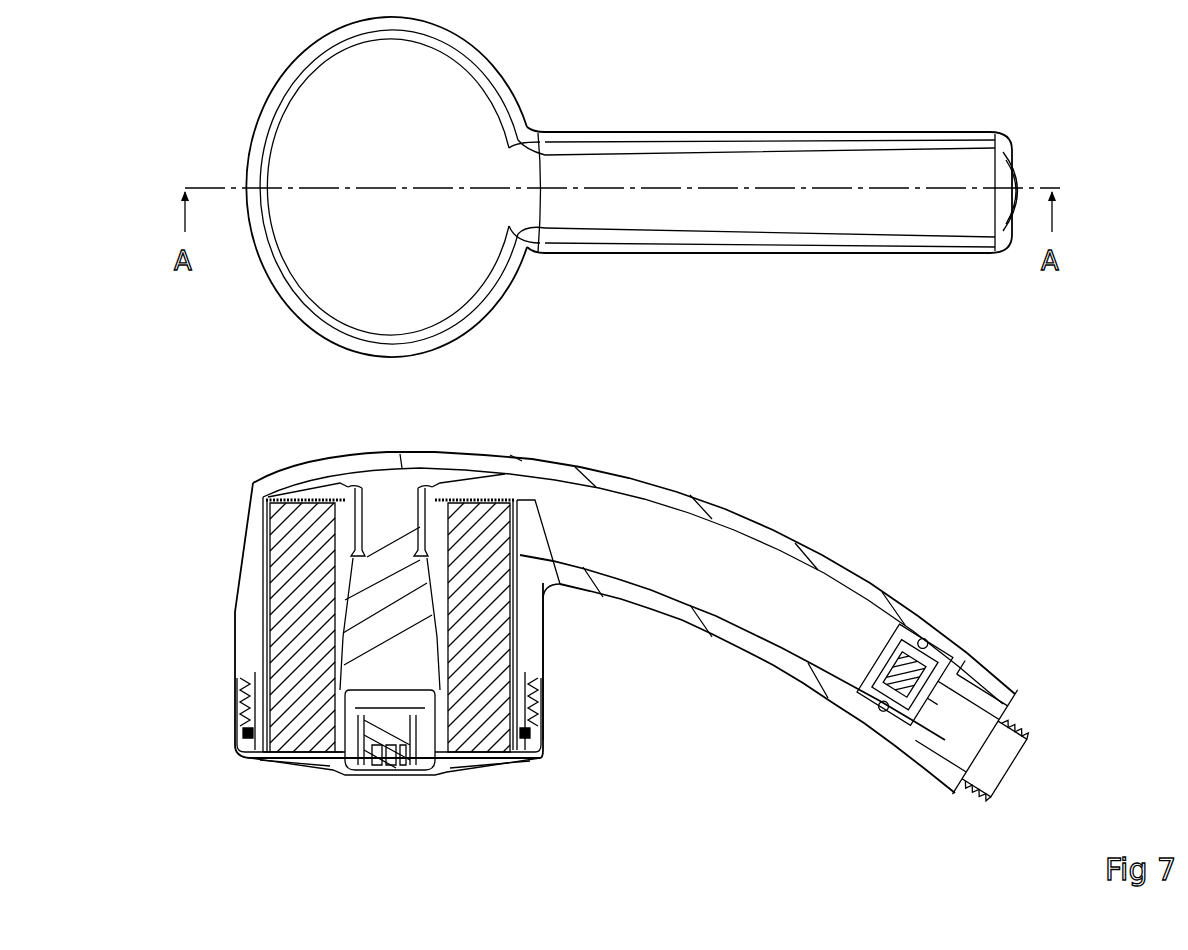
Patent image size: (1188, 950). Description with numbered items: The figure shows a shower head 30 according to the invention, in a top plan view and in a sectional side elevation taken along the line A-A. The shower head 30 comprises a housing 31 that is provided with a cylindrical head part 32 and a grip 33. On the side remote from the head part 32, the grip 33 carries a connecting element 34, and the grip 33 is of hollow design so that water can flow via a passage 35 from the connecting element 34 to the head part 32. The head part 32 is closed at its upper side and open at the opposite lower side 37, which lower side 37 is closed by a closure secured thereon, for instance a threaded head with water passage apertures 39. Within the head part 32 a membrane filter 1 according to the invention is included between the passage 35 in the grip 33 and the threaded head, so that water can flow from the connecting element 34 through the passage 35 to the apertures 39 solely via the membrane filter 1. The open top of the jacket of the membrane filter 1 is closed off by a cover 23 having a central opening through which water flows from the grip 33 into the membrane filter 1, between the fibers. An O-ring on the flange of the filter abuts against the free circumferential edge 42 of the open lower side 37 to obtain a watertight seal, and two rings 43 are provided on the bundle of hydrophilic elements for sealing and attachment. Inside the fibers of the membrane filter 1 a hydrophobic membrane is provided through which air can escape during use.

The membrane filter 1 is at (264, 634).
The cover 23 is at (338, 467).
The shower head 30 is at (266, 294).
The housing 31 is at (711, 297).
The head part 32 is at (533, 641).
The grip 33 is at (792, 549).
The connecting element 34 is at (998, 695).
The passage 35 is at (730, 594).
The lower side 37 is at (228, 748).
The water passage apertures 39 is at (522, 770).
The free circumferential edge 42 is at (250, 693).
The rings 43 is at (265, 754).